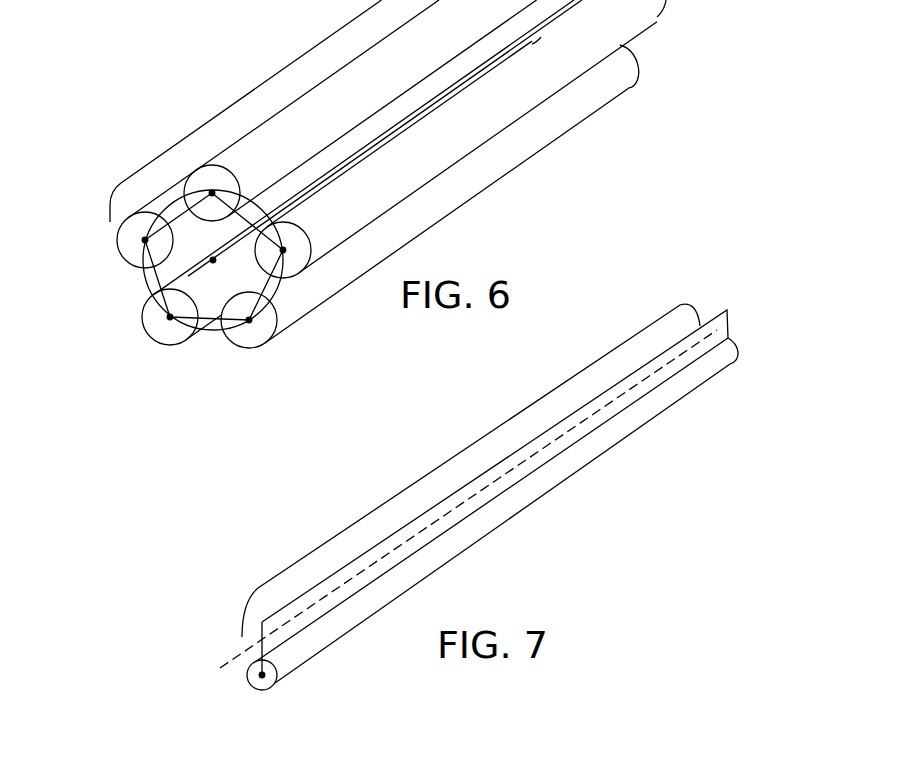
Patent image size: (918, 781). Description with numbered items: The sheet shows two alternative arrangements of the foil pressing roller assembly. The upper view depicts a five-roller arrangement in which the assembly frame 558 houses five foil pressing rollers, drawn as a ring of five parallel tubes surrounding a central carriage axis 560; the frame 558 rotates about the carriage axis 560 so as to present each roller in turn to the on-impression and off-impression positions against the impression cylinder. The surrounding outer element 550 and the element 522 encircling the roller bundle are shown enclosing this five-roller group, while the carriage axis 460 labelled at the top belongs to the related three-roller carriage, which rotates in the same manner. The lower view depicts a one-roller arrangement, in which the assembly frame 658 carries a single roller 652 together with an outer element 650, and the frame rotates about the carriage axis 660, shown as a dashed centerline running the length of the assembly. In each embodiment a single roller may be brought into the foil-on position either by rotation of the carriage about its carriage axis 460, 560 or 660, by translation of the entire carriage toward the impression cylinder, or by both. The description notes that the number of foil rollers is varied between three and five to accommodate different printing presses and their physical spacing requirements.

In FIG. 6, the carriage axis 460 is at (138, 9).
In FIG. 6, the outer sheath 550 is at (342, 28).
In FIG. 6, the assembly frame 558 is at (120, 240).
In FIG. 6, the sheath lumen 522 is at (146, 283).
In FIG. 6, the carriage axis 560 is at (148, 327).
In FIG. 7, the outer sheath 650 is at (468, 440).
In FIG. 7, the assembly frame 658 is at (245, 635).
In FIG. 7, the carriage axis 660 is at (222, 666).
In FIG. 7, the tubular member 652 is at (247, 680).